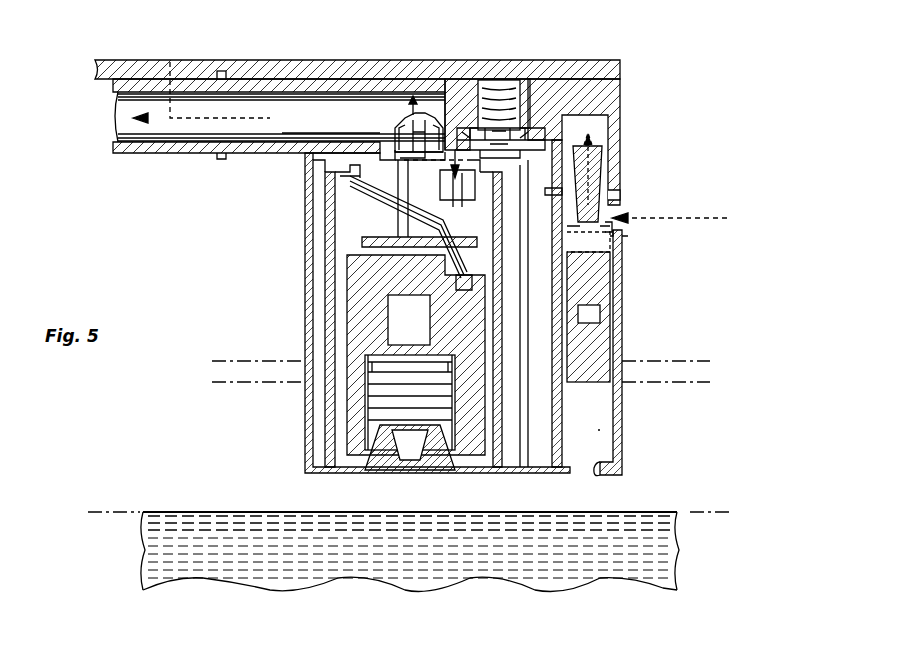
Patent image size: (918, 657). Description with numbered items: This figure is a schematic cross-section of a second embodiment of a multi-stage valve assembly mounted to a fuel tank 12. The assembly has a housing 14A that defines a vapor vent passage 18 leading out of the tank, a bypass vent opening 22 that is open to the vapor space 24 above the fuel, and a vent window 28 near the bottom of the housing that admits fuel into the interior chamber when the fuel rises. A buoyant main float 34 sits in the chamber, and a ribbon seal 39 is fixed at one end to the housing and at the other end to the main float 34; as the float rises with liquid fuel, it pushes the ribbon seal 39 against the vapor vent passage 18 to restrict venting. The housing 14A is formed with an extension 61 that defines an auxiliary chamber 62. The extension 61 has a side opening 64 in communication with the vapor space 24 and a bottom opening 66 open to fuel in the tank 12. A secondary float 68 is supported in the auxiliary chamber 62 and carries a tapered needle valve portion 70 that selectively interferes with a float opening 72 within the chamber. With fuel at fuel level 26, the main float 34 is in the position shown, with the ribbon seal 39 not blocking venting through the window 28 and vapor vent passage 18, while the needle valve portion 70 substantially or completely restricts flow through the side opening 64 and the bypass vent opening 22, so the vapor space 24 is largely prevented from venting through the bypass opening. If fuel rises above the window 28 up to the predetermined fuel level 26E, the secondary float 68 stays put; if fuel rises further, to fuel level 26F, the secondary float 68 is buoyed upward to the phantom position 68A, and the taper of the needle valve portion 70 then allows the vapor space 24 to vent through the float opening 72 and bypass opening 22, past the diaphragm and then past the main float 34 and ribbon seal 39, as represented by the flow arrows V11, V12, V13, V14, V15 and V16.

The fuel tank 12 is at (386, 60).
The vapor vent passage 18 is at (386, 178).
The ribbon seal 39 is at (365, 185).
The bypass vent opening 22 is at (537, 138).
The housing 14A is at (305, 263).
The vapor space 24 is at (725, 297).
The fuel level 26 is at (712, 512).
The fuel level 26E is at (245, 385).
The fuel level 26F is at (220, 360).
The vent window 28 is at (325, 440).
The main float 34 is at (357, 383).
The extension 61 is at (620, 160).
The auxiliary chamber 62 is at (588, 433).
The side opening 64 is at (612, 224).
The bottom opening 66 is at (600, 484).
The secondary float 68 is at (600, 326).
The secondary float raised position 68A is at (630, 122).
The needle valve portion 70 is at (598, 243).
The float opening 72 is at (609, 213).
The venting flow arrow V11 is at (704, 215).
The venting flow arrow V12 is at (598, 130).
The venting flow arrow V13 is at (515, 152).
The venting flow arrow V14 is at (483, 76).
The venting flow arrow V15 is at (408, 122).
The venting flow arrow V16 is at (168, 62).